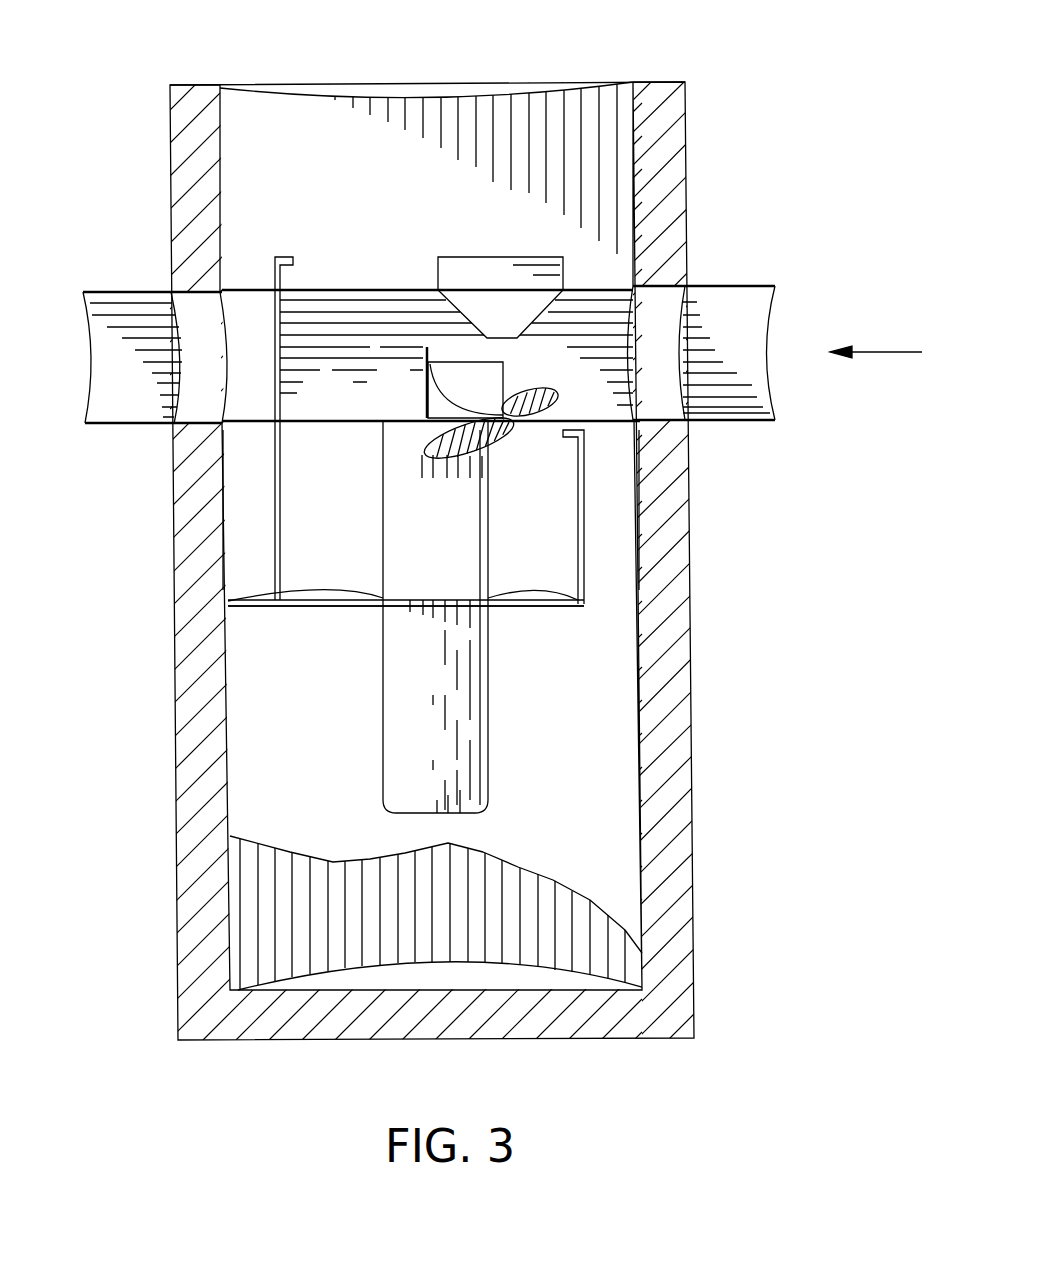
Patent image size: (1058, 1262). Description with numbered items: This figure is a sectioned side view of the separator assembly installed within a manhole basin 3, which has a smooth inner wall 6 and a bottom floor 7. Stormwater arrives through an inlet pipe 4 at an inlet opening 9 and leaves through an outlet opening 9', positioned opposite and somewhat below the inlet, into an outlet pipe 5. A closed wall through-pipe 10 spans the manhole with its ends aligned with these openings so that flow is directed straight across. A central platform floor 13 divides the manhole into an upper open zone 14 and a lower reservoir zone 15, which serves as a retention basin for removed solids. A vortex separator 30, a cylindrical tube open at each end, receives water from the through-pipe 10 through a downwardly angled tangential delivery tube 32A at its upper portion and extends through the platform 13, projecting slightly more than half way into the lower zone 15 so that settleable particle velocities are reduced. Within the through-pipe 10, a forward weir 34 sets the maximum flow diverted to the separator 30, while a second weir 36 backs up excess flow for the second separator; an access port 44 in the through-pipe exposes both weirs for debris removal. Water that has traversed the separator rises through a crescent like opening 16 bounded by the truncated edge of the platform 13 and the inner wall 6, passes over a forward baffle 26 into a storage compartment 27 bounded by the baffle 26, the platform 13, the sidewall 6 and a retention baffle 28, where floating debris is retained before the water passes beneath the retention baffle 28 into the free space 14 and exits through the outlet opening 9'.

The manhole basin 3 is at (695, 848).
The inlet pipe 4 is at (770, 303).
The outlet pipe 5 is at (90, 345).
The inner wall 6 is at (292, 128).
The bottom floor 7 is at (517, 983).
The inlet opening 9 is at (477, 326).
The outlet opening 9' is at (153, 331).
The through-pipe 10 is at (338, 312).
The central platform floor 13 is at (528, 606).
The upper open zone 14 is at (241, 491).
The lower zone 15 is at (407, 855).
The crescent like opening 16 is at (609, 577).
The forward baffle 26 is at (585, 545).
The storage compartment 27 is at (344, 564).
The retention baffle 28 is at (275, 460).
The vortex separator 30 is at (472, 513).
The tangential delivery tube 32A is at (487, 432).
The forward weir 34 is at (497, 353).
The second weir 36 is at (423, 385).
The access port 44 is at (507, 285).